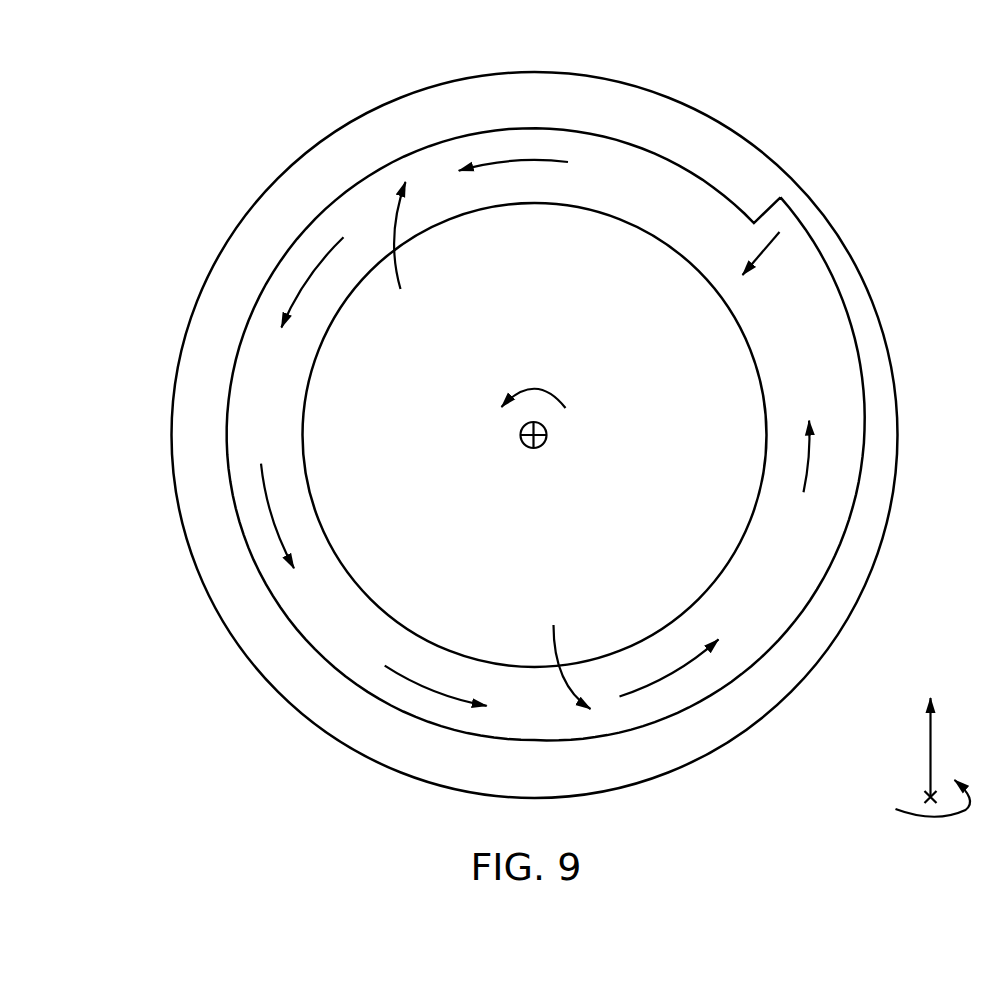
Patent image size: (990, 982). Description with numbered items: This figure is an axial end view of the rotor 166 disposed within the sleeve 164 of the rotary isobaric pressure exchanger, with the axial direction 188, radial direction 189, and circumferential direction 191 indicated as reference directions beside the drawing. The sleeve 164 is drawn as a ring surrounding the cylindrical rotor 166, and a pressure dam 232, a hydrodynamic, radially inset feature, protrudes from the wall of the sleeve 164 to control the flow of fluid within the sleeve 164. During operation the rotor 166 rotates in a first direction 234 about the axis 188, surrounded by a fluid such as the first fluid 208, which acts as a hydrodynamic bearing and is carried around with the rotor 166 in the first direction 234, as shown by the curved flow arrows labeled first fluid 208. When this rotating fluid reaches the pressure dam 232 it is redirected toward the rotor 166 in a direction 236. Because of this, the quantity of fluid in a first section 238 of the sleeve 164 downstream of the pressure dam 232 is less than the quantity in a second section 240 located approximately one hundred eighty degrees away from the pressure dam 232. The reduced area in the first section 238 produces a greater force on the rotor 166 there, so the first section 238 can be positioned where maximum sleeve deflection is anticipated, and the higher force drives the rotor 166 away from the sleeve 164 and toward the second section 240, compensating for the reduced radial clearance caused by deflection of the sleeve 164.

The sleeve 164 is at (653, 84).
The pressure dam 232 is at (753, 198).
The rotor 166 is at (499, 333).
The first fluid 208 is at (520, 160).
The first section 238 is at (404, 254).
The direction 236 is at (765, 247).
The first direction 234 is at (536, 388).
The second section 240 is at (562, 650).
The axial direction 188 is at (924, 794).
The radial direction 189 is at (932, 748).
The circumferential direction 191 is at (920, 813).